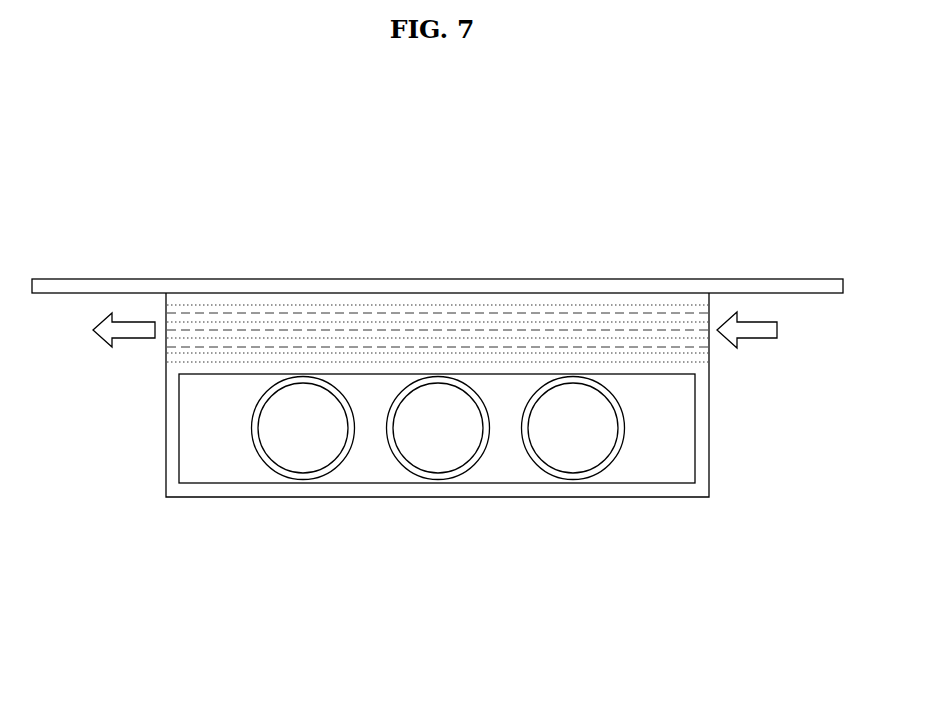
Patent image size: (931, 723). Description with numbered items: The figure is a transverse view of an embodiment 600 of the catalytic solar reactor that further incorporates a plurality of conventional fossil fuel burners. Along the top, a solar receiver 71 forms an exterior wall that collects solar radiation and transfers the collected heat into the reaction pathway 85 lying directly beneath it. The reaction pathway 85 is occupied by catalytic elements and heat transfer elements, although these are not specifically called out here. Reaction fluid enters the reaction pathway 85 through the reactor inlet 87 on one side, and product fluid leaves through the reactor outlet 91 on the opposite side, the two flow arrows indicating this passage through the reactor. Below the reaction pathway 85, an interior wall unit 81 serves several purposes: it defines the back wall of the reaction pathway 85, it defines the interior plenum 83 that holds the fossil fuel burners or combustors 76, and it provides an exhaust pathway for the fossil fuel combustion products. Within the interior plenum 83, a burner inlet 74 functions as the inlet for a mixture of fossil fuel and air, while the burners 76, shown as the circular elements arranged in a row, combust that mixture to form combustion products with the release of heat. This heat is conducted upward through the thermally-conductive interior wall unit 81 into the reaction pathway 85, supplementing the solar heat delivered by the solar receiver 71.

The catalytic solar reactor embodiment 600 is at (85, 218).
The solar receiver 71 is at (665, 279).
The interior wall unit 81 is at (190, 366).
The reaction pathway 85 is at (449, 310).
The interior plenum 83 is at (670, 425).
The burner inlet 74 is at (437, 449).
The burners 76 is at (327, 469).
The reactor outlet 91 is at (109, 330).
The reactor inlet 87 is at (764, 330).